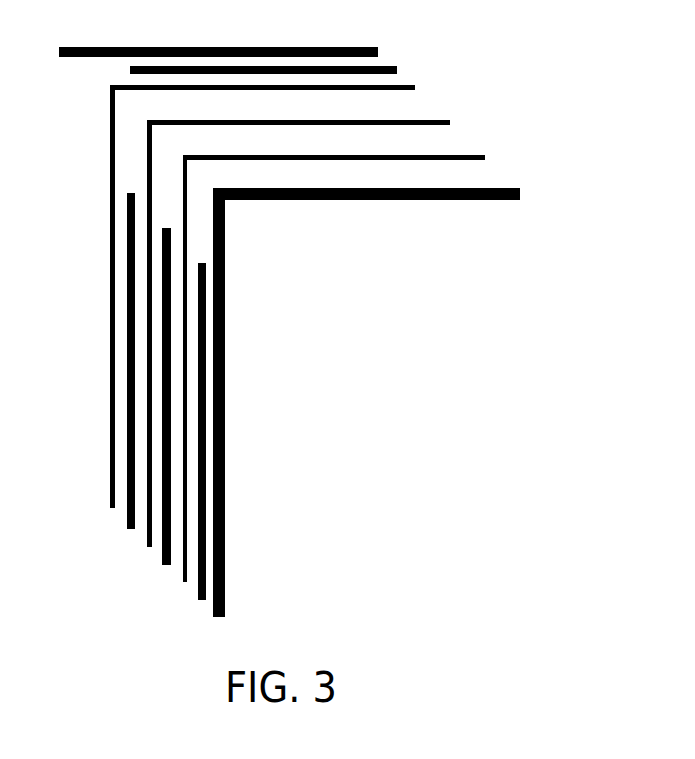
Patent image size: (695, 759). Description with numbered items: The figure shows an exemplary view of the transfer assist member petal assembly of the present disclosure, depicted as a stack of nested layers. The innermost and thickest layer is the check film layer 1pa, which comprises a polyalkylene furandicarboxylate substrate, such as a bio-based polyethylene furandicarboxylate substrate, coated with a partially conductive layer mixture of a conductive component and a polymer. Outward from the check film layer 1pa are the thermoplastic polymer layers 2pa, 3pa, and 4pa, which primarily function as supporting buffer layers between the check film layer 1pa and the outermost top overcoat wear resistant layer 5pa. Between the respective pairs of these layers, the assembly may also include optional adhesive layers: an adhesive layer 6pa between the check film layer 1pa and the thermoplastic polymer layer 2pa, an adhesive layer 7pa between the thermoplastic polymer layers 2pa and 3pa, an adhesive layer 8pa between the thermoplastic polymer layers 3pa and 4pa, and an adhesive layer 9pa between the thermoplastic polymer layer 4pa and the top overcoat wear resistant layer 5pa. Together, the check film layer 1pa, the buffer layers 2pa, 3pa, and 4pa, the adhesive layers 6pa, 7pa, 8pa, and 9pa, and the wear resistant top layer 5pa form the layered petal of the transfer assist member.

The check film layer 1pa is at (520, 194).
The thermoplastic polymer layer 2pa is at (485, 158).
The thermoplastic polymer layer 3pa is at (450, 123).
The thermoplastic polymer layer 4pa is at (415, 88).
The top overcoat wear resistant layer 5pa is at (378, 52).
The adhesive layer 6pa is at (198, 487).
The adhesive layer 7pa is at (162, 392).
The adhesive layer 8pa is at (127, 287).
The adhesive layer 9pa is at (130, 70).